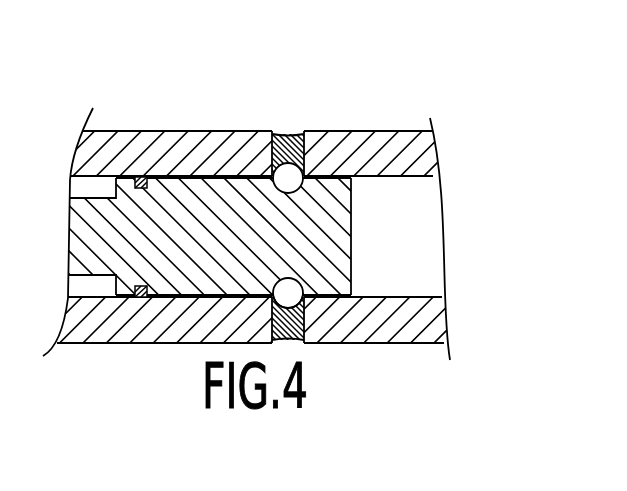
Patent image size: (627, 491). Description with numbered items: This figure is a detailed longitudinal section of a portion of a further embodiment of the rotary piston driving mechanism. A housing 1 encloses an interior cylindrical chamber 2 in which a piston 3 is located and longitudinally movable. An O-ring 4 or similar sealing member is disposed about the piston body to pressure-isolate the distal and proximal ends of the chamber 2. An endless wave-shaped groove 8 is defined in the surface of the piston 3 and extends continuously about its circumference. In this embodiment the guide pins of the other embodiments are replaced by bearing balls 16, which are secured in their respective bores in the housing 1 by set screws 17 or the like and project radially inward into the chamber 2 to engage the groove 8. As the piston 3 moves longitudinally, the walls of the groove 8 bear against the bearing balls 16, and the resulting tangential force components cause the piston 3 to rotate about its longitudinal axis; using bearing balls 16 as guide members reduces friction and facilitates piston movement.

The housing 1 is at (432, 135).
The interior cylindrical chamber 2 is at (403, 227).
The piston 3 is at (183, 201).
The O-ring 4 is at (140, 180).
The endless wave-shaped groove 8 is at (300, 287).
The bearing balls 16 is at (281, 290).
The set screws 17 is at (302, 133).